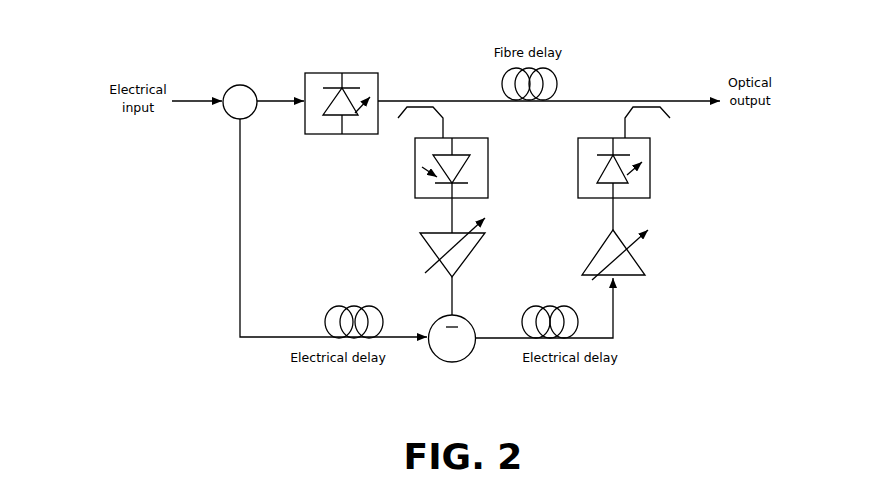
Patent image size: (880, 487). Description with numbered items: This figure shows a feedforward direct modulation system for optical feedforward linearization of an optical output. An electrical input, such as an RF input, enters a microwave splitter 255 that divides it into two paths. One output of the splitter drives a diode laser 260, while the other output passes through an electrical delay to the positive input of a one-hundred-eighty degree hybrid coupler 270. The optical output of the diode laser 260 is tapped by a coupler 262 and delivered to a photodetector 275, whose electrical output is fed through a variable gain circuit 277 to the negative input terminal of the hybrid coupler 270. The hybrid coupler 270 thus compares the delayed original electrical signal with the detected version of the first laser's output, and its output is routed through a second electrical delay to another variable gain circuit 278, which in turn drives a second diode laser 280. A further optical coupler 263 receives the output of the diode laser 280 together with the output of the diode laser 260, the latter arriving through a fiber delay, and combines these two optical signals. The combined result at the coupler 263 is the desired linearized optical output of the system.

The microwave splitter 255 is at (231, 111).
The diode laser 260 is at (378, 76).
The coupler 262 is at (447, 107).
The optical coupler 263 is at (667, 107).
The 180 degree hybrid coupler 270 is at (430, 346).
The photodetector 275 is at (477, 158).
The variable gain circuit 277 is at (462, 244).
The variable gain circuit 278 is at (637, 270).
The diode laser 280 is at (650, 192).